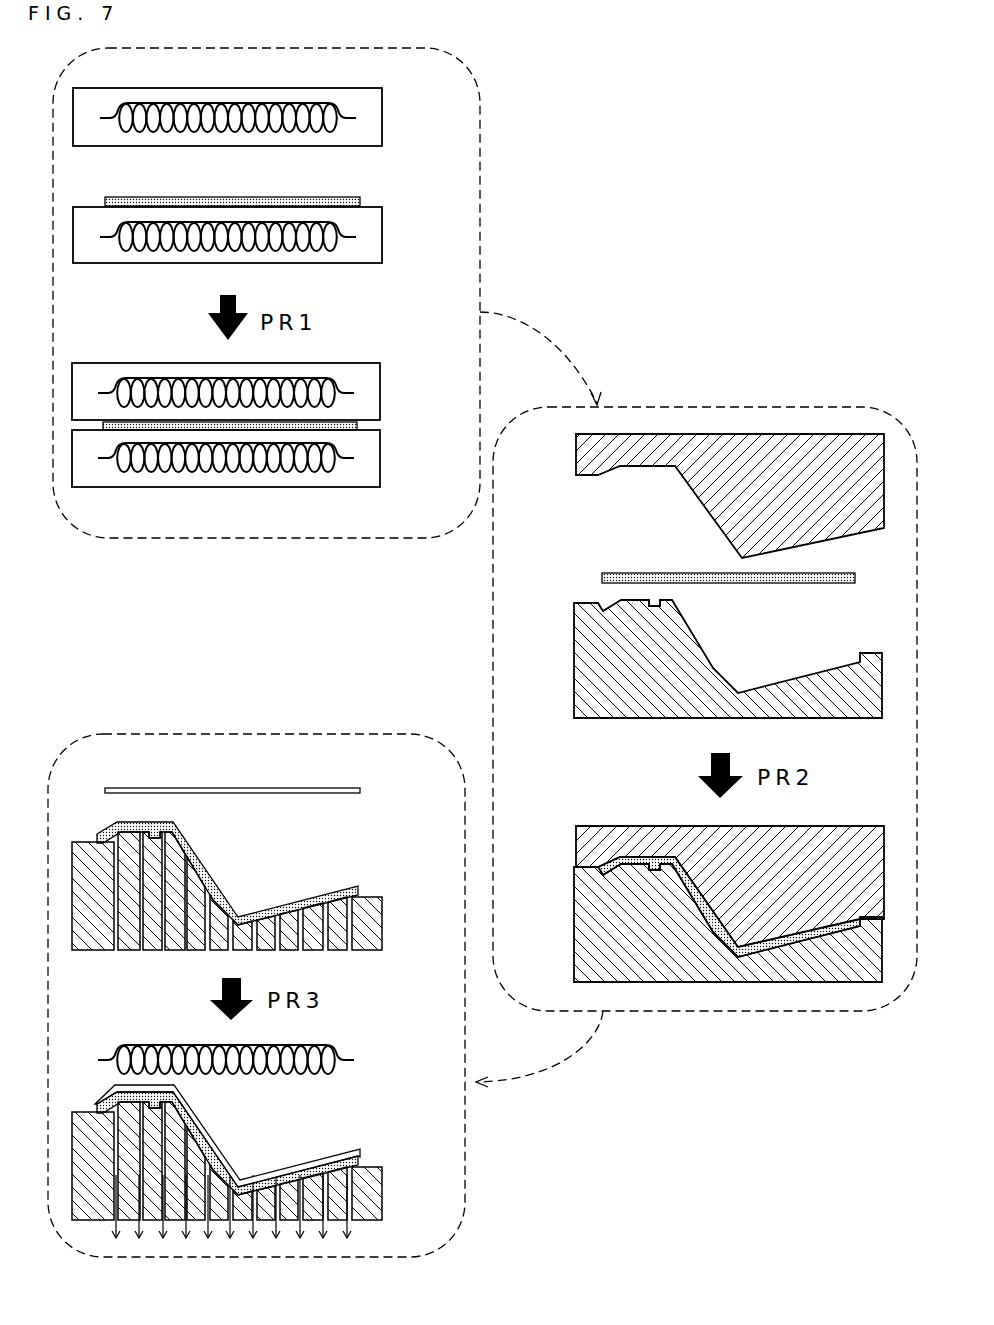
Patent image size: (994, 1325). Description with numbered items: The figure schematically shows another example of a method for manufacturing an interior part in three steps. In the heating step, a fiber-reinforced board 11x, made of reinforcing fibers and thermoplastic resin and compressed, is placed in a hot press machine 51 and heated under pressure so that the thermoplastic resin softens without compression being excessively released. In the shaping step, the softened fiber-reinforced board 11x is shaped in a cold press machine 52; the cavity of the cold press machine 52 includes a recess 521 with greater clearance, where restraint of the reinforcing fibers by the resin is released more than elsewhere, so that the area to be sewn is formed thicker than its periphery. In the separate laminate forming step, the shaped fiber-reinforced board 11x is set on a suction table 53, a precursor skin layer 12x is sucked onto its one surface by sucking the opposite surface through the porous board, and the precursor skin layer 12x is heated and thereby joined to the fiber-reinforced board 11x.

The fiber-reinforced board 11x is at (330, 197).
The precursor skin layer 12x is at (333, 788).
The hot press machine 51 is at (373, 238).
The cold press machine 52 is at (574, 668).
The recess 521 is at (663, 600).
The suction table 53 is at (380, 913).